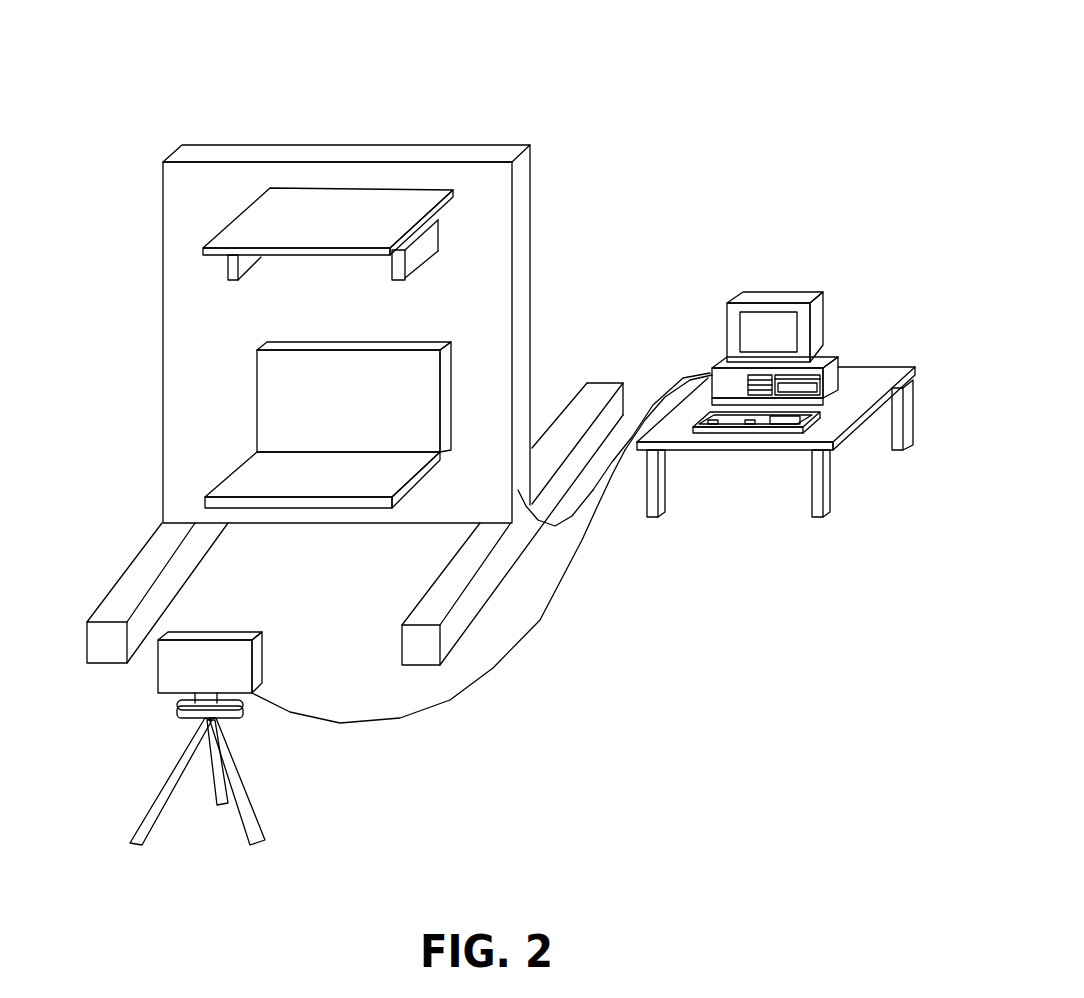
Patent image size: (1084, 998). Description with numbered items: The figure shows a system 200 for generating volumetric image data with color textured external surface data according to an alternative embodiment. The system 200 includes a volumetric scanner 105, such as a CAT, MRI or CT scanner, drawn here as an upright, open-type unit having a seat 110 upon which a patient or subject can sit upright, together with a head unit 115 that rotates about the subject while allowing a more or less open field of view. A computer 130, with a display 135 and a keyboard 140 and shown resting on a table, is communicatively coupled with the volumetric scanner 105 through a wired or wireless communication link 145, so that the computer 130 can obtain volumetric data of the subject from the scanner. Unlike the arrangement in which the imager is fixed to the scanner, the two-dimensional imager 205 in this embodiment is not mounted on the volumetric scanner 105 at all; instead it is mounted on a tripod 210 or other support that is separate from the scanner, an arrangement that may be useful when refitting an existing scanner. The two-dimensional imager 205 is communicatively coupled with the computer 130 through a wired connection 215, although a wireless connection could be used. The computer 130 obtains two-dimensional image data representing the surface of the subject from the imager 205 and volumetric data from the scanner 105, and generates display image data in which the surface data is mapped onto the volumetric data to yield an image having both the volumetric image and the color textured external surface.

The system 200 is at (600, 45).
The volumetric scanner 105 is at (387, 334).
The seat 110 is at (328, 452).
The head unit 115 is at (394, 230).
The computer 130 is at (806, 360).
The display 135 is at (775, 305).
The keyboard 140 is at (756, 463).
The communication link 145 is at (652, 398).
The two-dimensional imager 205 is at (255, 660).
The tripod 210 is at (241, 772).
The wired connection 215 is at (438, 592).